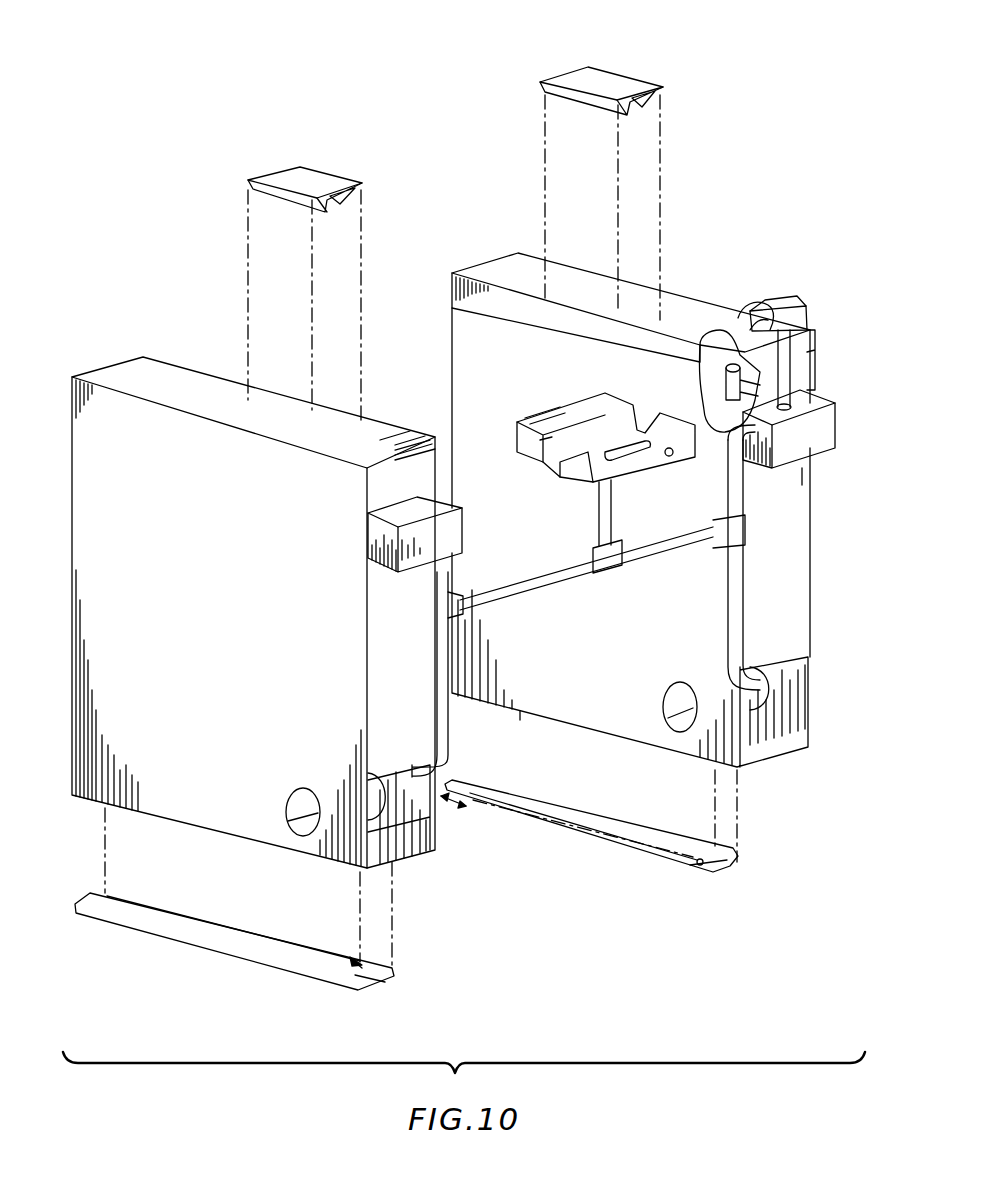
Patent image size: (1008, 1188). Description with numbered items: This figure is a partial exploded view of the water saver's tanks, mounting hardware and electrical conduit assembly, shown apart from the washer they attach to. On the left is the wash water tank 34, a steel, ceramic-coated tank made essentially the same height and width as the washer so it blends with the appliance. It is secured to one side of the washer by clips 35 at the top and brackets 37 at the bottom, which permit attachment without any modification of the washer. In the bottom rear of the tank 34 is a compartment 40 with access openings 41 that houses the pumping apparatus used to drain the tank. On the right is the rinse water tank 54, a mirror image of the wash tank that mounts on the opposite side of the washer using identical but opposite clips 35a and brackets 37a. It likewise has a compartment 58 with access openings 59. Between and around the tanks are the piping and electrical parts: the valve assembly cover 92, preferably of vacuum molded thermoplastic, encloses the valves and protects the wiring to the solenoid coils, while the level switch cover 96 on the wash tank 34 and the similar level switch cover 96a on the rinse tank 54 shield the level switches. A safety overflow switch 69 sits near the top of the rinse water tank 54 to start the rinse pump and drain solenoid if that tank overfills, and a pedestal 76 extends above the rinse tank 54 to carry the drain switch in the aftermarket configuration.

The wash water tank 34 is at (207, 370).
The clips 35 is at (300, 163).
The clips 35a is at (625, 75).
The brackets 37 is at (228, 958).
The brackets 37a is at (648, 857).
The compartment 40 is at (393, 852).
The access openings 41 is at (290, 822).
The rinse water tank 54 is at (728, 250).
The compartment 58 is at (757, 749).
The access openings 59 is at (672, 732).
The safety overflow switch 69 is at (778, 268).
The pedestal 76 is at (817, 354).
The valve assembly cover 92 is at (540, 413).
The level switch cover 96 is at (441, 497).
The level switch cover 96a is at (810, 470).